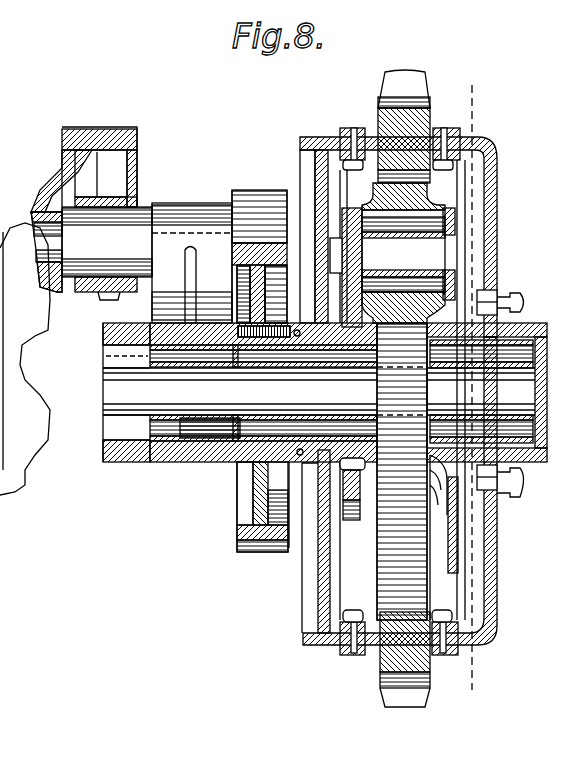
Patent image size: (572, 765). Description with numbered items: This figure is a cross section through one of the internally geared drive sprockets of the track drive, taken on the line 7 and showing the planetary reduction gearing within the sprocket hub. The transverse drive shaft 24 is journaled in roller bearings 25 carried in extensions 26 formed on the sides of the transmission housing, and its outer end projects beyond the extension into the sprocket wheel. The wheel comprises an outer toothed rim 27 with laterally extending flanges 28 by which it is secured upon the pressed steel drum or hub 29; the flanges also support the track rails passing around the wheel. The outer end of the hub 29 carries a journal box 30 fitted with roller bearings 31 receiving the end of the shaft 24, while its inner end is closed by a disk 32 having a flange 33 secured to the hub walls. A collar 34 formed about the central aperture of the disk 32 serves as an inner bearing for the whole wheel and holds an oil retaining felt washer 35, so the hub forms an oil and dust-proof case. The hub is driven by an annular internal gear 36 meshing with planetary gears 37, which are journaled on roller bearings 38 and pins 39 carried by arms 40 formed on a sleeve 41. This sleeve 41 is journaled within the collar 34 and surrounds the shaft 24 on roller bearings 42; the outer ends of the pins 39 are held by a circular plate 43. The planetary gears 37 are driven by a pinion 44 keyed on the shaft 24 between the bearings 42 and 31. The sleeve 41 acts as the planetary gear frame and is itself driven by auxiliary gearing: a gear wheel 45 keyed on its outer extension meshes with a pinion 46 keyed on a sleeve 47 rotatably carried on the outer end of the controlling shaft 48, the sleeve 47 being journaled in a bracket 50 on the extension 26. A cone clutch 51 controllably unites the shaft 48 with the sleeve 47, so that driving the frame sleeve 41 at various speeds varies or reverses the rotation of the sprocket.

The section line 7 is at (465, 382).
The transverse drive shaft 24 is at (319, 391).
The roller bearings 25 is at (190, 440).
The extensions 26 is at (141, 450).
The outer toothed rim 27 is at (384, 104).
The laterally extending flanges 28 is at (354, 136).
The drum or hub 29 is at (310, 143).
The journal box 30 is at (512, 337).
The roller bearings 31 is at (507, 350).
The disk 32 is at (318, 603).
The flange 33 is at (300, 158).
The collar 34 is at (322, 300).
The oil retaining felt washer 35 is at (312, 463).
The annular internal gear 36 is at (380, 594).
The planetary gears 37 is at (418, 213).
The roller bearings 38 is at (470, 226).
The pins 39 is at (403, 251).
The arms 40 is at (350, 210).
The sleeve 41 is at (346, 350).
The roller bearings 42 is at (306, 352).
The circular plate 43 is at (466, 291).
The pinion 44 is at (440, 368).
The gear wheel 45 is at (245, 492).
The pinion 46 is at (250, 198).
The sleeve 47 is at (107, 242).
The auxiliary driving or controlling shaft 48 is at (43, 238).
The bracket 50 is at (190, 250).
The cone clutch 51 is at (113, 138).